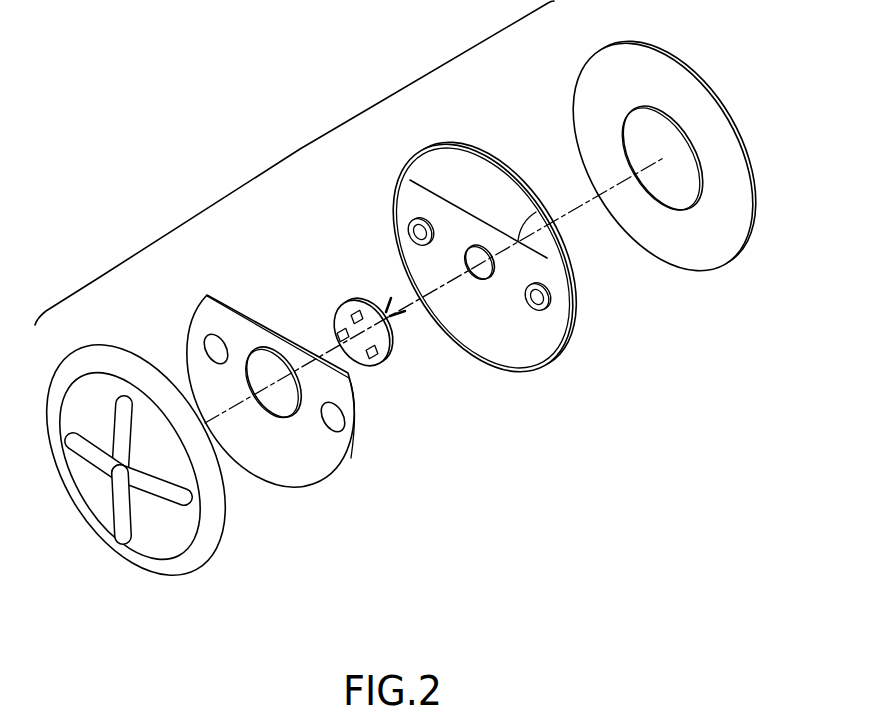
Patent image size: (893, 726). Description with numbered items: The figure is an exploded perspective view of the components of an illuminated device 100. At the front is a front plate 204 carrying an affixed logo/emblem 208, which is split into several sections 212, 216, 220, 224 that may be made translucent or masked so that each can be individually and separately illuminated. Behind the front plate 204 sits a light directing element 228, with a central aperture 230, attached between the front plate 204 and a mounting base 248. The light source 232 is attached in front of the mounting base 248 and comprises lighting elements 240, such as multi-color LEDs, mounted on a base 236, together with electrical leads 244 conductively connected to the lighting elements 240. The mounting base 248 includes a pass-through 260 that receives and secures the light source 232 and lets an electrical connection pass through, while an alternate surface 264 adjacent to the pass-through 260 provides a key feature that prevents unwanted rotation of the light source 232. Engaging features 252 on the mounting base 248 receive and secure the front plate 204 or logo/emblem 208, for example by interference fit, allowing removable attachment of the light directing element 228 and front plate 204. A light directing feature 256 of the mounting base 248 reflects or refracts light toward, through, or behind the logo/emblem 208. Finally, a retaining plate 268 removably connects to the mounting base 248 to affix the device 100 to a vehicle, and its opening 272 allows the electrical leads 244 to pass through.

The illuminated device 100 is at (257, 179).
The front plate 204 is at (200, 563).
The logo/emblem 208 is at (102, 515).
The section 212 is at (160, 498).
The section 216 is at (131, 428).
The section 220 is at (75, 450).
The section 224 is at (118, 533).
The light directing element 228 is at (283, 402).
The central aperture 230 is at (272, 349).
The light source 232 is at (380, 332).
The base 236 is at (355, 301).
The lighting elements 240 is at (352, 312).
The electrical leads 244 is at (388, 309).
The mounting base 248 is at (492, 257).
The engaging features 252 is at (408, 229).
The light directing feature 256 is at (541, 366).
The pass-through 260 is at (480, 280).
The alternate surface 264 is at (523, 222).
The retaining plate 268 is at (664, 157).
The opening 272 is at (682, 125).